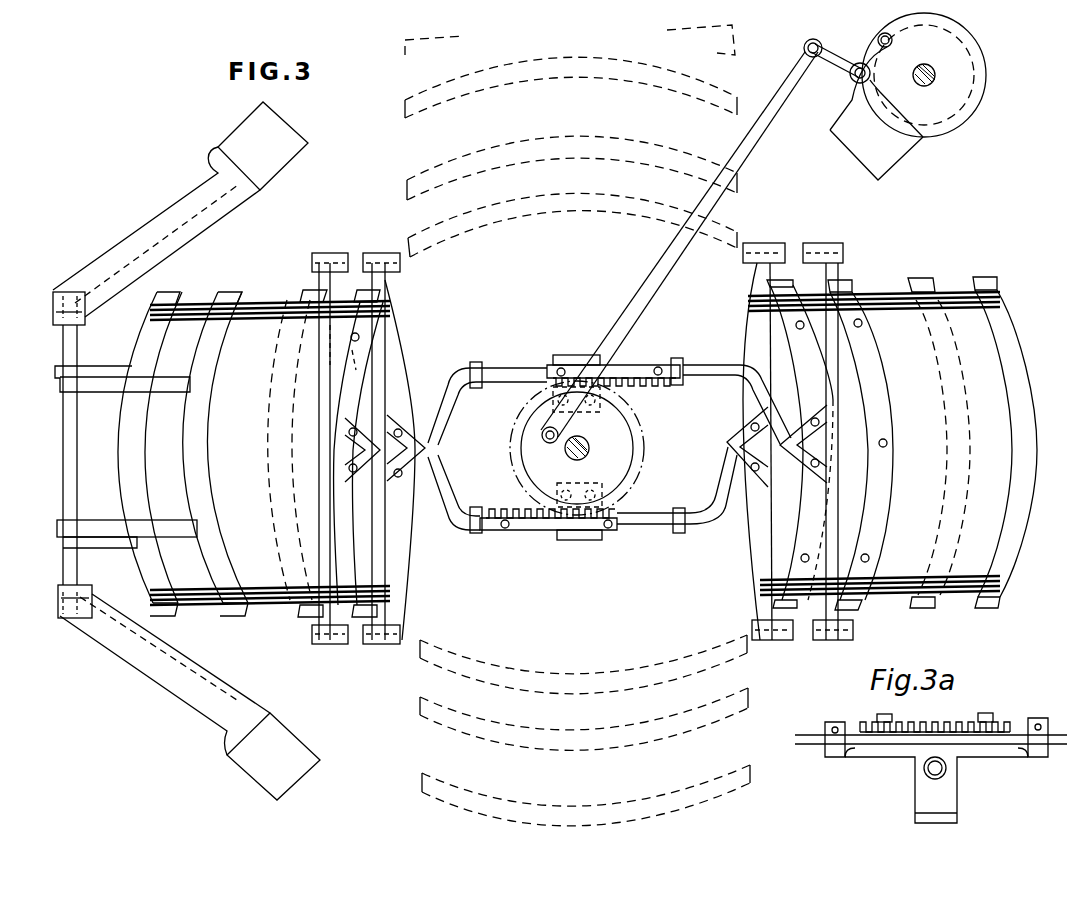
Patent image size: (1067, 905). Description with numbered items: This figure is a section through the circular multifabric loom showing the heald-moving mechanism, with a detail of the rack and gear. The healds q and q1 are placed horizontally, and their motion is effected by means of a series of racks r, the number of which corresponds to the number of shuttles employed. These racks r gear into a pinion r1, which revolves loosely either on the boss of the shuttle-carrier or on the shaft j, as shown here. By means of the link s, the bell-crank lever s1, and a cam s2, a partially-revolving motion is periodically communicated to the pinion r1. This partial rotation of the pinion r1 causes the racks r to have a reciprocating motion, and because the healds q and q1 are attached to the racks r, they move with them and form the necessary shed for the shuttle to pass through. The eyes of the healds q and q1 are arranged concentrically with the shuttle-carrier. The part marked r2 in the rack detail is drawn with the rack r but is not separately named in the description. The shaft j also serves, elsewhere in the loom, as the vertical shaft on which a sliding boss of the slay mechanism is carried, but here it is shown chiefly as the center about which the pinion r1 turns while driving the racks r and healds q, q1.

In FIG. 3, the heald q is at (405, 57).
In FIG. 3, the heald q1 is at (413, 187).
In FIG. 3, the link s is at (665, 272).
In FIG. 3, the bell-crank lever s1 is at (840, 53).
In FIG. 3, the cam s2 is at (983, 72).
In FIG. 3, the shaft j is at (565, 450).
In FIG. 3, the rack r is at (542, 523).
In FIG. 3A, the rack r is at (903, 725).
In FIG. 3, the pinion r1 is at (623, 467).
In FIG. 3, the rack guide bracket r2 is at (650, 358).
In FIG. 3A, the rack guide bracket r2 is at (978, 730).